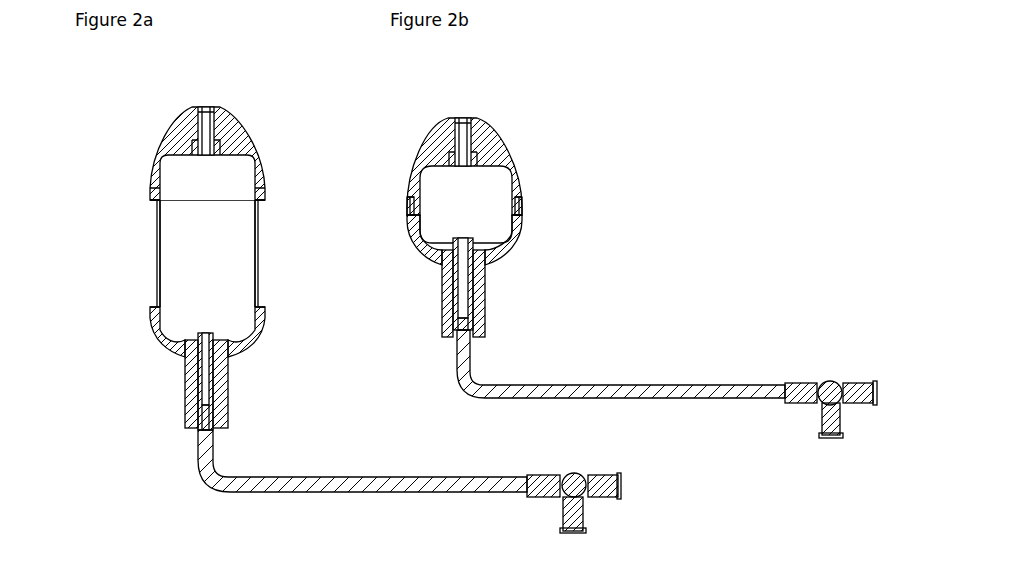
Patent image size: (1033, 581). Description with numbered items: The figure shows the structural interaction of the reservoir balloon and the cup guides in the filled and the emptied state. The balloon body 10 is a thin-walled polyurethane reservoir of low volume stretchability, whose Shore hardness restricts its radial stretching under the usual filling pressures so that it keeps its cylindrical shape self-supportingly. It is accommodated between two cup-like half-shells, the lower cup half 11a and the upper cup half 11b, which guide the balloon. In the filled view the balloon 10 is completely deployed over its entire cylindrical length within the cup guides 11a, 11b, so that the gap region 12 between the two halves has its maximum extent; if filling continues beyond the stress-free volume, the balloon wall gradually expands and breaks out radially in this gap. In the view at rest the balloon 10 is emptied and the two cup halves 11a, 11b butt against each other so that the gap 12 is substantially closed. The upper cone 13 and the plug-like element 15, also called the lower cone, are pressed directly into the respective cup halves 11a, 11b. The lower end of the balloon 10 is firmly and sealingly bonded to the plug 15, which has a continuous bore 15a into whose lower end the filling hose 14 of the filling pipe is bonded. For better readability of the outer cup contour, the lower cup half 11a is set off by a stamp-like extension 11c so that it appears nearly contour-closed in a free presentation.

In FIG. 2a, the balloon body 10 is at (183, 260).
In FIG. 2b, the balloon body 10 is at (430, 195).
In FIG. 2a, the lower cup half 11a is at (160, 352).
In FIG. 2b, the lower cup half 11a is at (435, 255).
In FIG. 2a, the upper cup half 11b is at (170, 140).
In FIG. 2b, the upper cup half 11b is at (487, 138).
In FIG. 2a, the stamp-like extension 11c is at (185, 400).
In FIG. 2b, the stamp-like extension 11c is at (485, 298).
In FIG. 2a, the gap region 12 is at (268, 203).
In FIG. 2b, the gap region 12 is at (522, 212).
In FIG. 2a, the upper cone 13 is at (205, 140).
In FIG. 2b, the upper cone 13 is at (470, 155).
In FIG. 2a, the filling hose 14 is at (360, 487).
In FIG. 2b, the filling hose 14 is at (690, 385).
In FIG. 2a, the plug-like element 15 is at (228, 378).
In FIG. 2b, the plug-like element 15 is at (470, 288).
In FIG. 2a, the continuous bore 15a is at (190, 410).
In FIG. 2b, the continuous bore 15a is at (462, 293).